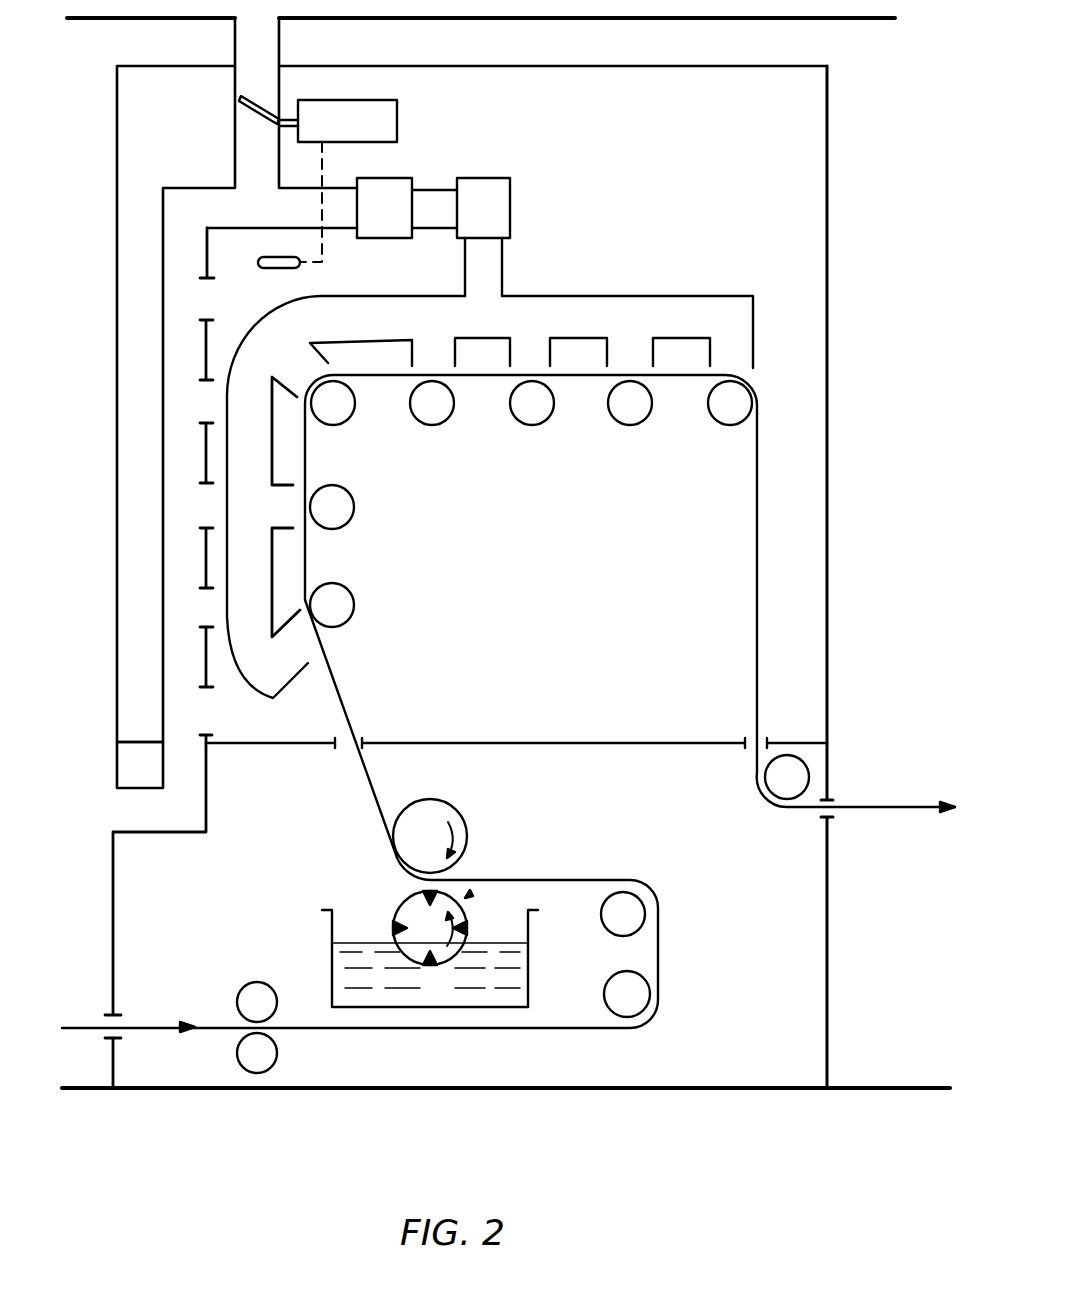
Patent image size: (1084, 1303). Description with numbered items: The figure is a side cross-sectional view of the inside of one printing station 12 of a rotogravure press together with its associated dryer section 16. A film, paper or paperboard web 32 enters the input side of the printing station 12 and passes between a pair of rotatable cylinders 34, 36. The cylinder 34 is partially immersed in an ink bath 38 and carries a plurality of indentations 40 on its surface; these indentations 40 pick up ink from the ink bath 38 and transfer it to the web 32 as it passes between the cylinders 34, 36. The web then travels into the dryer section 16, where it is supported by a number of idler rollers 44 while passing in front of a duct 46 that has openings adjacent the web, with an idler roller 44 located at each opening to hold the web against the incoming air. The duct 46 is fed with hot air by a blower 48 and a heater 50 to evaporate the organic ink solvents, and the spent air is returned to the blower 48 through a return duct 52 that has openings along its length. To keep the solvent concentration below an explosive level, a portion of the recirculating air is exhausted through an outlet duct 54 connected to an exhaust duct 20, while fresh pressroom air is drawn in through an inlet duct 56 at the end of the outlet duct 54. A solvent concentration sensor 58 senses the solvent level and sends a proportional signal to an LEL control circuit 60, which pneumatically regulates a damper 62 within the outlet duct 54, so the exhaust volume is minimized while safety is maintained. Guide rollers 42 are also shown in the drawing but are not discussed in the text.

The printing station 12 is at (815, 968).
The dryer section 16 is at (815, 410).
The exhaust duct 20 is at (662, 5).
The web 32 is at (165, 1022).
The cylinder 34 is at (467, 915).
The cylinder 36 is at (467, 840).
The ink bath 38 is at (340, 980).
The indentations 40 is at (390, 930).
The guide rollers 42 is at (617, 923).
The idler rollers 44 is at (348, 415).
The duct 46 is at (668, 278).
The blower 48 is at (400, 176).
The heater 50 is at (495, 183).
The duct 52 is at (190, 457).
The outlet duct 54 is at (243, 152).
The inlet duct 56 is at (125, 812).
The solvent concentration sensor 58 is at (282, 270).
The LEL control circuit 60 is at (397, 108).
The damper 62 is at (242, 103).